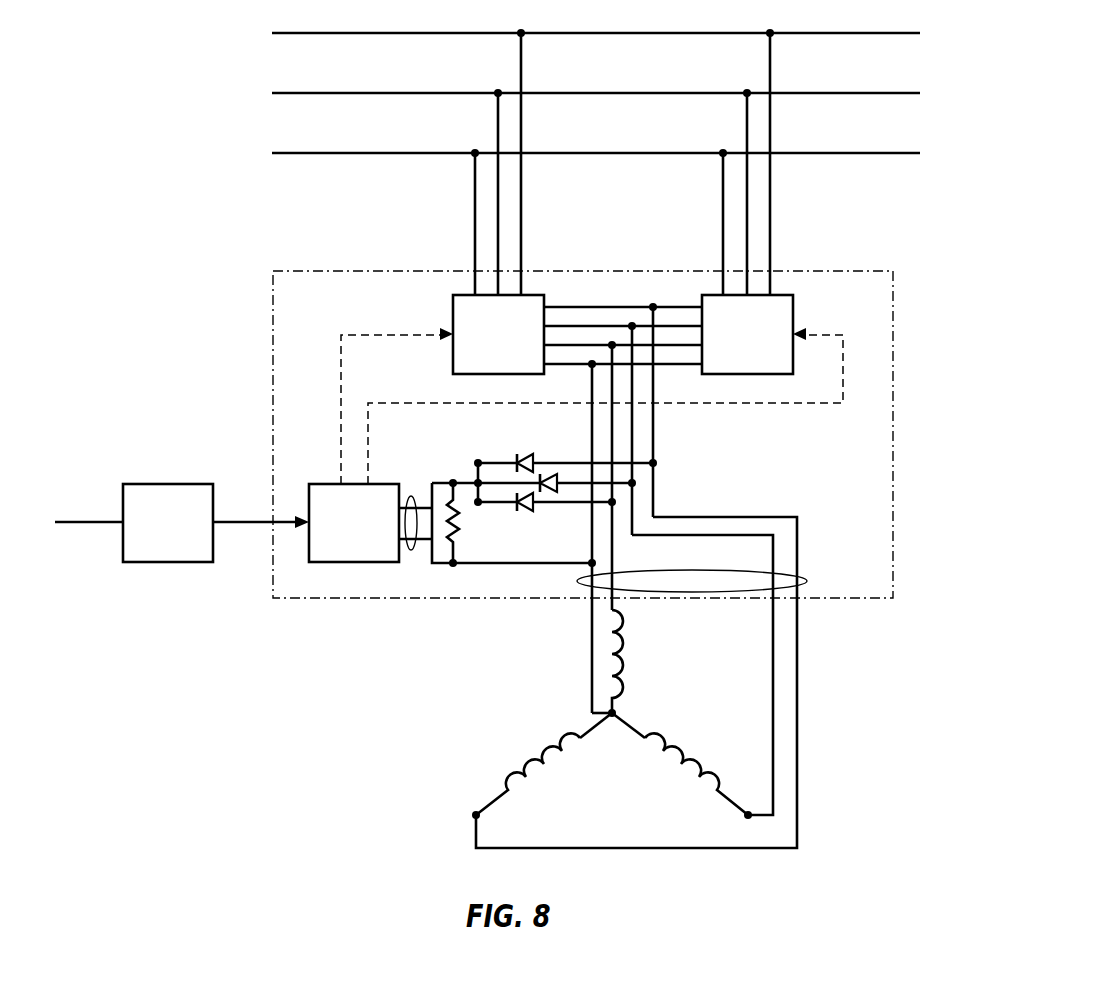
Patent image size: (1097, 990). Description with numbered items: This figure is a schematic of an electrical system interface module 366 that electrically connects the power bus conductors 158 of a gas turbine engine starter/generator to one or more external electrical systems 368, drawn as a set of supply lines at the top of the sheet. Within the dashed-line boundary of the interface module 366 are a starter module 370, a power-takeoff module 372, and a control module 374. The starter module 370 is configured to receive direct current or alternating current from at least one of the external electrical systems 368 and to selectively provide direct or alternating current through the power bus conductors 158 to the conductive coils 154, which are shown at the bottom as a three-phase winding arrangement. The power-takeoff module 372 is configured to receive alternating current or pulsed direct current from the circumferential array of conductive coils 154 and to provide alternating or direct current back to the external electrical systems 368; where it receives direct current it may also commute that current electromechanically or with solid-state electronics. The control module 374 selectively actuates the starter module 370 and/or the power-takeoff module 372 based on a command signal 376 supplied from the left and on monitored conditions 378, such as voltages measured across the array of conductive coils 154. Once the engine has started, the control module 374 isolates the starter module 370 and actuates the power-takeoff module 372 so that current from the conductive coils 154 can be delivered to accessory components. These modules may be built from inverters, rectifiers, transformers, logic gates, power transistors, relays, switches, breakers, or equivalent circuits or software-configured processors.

The conductive coil 154 is at (568, 713).
The power bus conductors 158 is at (800, 577).
The electrical system interface module 366 is at (846, 271).
The external electrical systems 368 is at (832, 170).
The starter module 370 is at (520, 352).
The power-takeoff module 372 is at (769, 352).
The control module 374 is at (376, 539).
The command signal 376 is at (190, 539).
The monitored conditions 378 is at (411, 550).